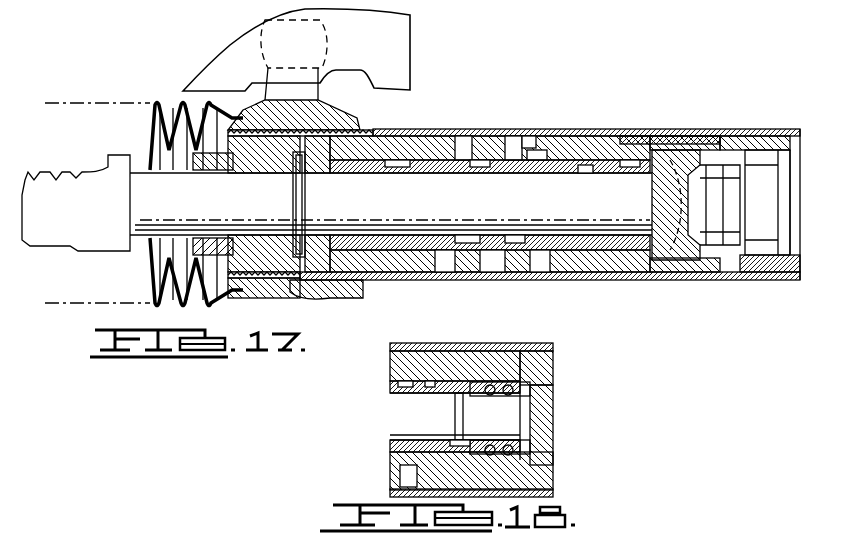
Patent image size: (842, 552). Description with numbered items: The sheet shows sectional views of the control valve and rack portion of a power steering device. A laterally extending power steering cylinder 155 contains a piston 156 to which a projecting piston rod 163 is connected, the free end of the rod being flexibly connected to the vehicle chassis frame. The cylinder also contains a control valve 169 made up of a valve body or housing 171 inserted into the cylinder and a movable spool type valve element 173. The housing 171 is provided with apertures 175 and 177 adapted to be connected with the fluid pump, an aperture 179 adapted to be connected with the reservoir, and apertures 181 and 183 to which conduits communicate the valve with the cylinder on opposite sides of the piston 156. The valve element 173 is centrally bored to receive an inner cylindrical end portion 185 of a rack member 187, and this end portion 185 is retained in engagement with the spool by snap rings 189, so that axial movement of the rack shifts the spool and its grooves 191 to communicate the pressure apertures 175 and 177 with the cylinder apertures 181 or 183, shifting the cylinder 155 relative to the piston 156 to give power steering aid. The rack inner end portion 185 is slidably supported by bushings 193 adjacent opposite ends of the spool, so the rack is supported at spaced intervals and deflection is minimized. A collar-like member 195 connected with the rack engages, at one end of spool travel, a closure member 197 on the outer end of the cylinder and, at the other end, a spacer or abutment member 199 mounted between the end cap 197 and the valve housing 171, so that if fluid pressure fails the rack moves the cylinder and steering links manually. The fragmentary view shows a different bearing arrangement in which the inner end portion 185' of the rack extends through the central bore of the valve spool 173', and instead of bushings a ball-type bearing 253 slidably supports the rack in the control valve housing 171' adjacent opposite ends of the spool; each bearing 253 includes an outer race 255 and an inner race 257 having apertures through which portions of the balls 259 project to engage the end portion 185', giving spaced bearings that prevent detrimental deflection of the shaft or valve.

In FIG. 17, the power steering cylinder 155 is at (710, 130).
In FIG. 17, the piston 156 is at (757, 160).
In FIG. 17, the piston rod 163 is at (788, 266).
In FIG. 17, the control valve 169 is at (492, 152).
In FIG. 17, the valve body or housing 171 is at (391, 154).
In FIG. 17, the movable spool type valve element 173 is at (550, 128).
In FIG. 17, the aperture 175 is at (434, 270).
In FIG. 17, the aperture 177 is at (532, 270).
In FIG. 17, the aperture 179 is at (483, 268).
In FIG. 17, the aperture 181 is at (463, 140).
In FIG. 17, the aperture 183 is at (528, 140).
In FIG. 17, the inner cylindrical end portion of rack member 185 is at (607, 137).
In FIG. 17, the rack member 187 is at (107, 155).
In FIG. 17, the snap rings 189 is at (396, 160).
In FIG. 18, the snap rings 189 is at (460, 447).
In FIG. 17, the grooves 191 is at (514, 240).
In FIG. 17, the bushings 193 is at (348, 172).
In FIG. 17, the collar-like member 195 is at (322, 283).
In FIG. 17, the closure member 197 is at (282, 290).
In FIG. 17, the spacer or abutment member 199 is at (332, 270).
In FIG. 18, the inner end portion of rack 185' is at (488, 379).
In FIG. 18, the outer race 255 is at (533, 370).
In FIG. 18, the ball-type bearing 253 is at (530, 393).
In FIG. 18, the inner race 257 is at (530, 388).
In FIG. 18, the balls 259 is at (513, 388).
In FIG. 18, the valve spool 173' is at (416, 407).
In FIG. 18, the control valve housing 171' is at (504, 465).